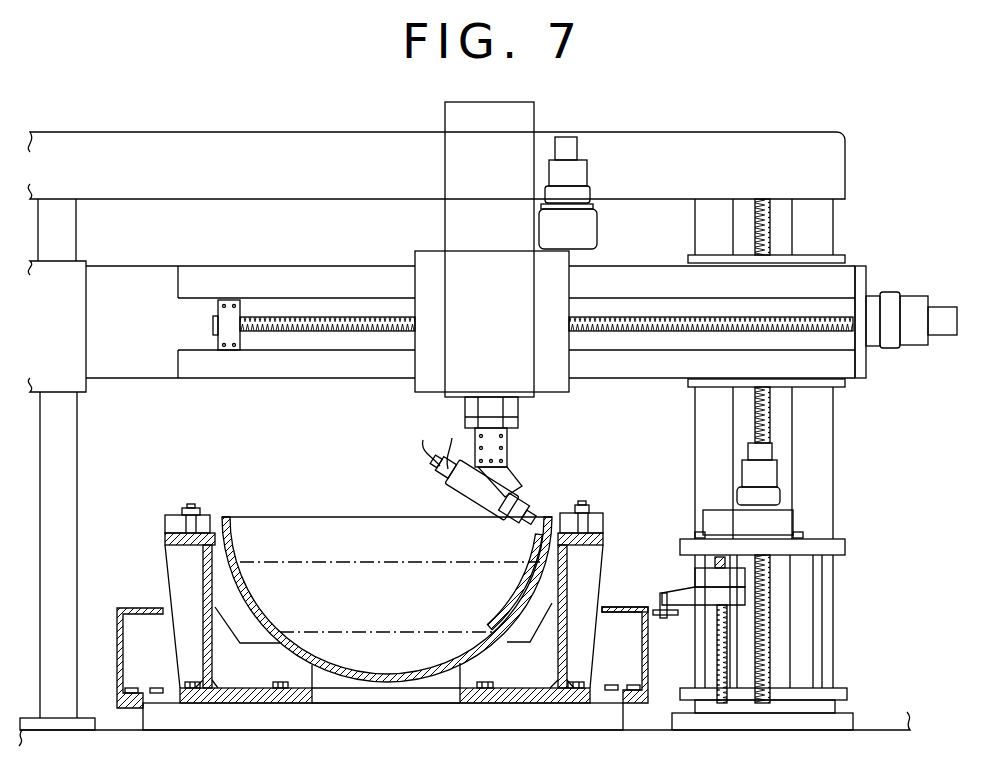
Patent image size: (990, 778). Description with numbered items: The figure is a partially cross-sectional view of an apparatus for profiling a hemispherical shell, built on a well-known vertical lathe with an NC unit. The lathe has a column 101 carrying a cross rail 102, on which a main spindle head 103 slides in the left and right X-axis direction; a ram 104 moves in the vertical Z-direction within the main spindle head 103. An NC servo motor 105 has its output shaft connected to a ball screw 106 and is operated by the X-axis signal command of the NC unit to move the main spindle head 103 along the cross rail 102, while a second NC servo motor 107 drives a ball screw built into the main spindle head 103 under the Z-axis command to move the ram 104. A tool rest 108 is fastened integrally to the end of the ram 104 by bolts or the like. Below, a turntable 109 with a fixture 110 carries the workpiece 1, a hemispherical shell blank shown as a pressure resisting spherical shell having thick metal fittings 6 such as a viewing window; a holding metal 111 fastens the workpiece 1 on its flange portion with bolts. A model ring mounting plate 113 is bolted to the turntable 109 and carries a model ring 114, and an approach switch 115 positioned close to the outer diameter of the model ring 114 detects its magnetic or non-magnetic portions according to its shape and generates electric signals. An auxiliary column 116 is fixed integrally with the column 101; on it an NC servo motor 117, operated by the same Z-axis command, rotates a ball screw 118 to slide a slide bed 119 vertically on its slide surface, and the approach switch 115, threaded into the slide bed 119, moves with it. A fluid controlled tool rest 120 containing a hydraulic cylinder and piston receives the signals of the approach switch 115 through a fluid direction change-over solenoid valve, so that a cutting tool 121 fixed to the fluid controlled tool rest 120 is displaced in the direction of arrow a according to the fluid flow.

The workpiece 1 is at (238, 540).
The thick metal fittings 6 is at (500, 622).
The arrow a is at (515, 500).
The column 101 is at (823, 425).
The cross rail 102 is at (833, 280).
The main spindle head 103 is at (523, 122).
The ram 104 is at (518, 407).
The NC servo motor 105 is at (920, 300).
The ball screw 106 is at (823, 316).
The NC servo motor 107 is at (578, 170).
The tool rest 108 is at (511, 420).
The turntable 109 is at (595, 715).
The fixture 110 is at (607, 535).
The holding metal 111 is at (600, 515).
The model ring mounting plate 113 is at (637, 707).
The model ring 114 is at (633, 605).
The approach switch 115 is at (656, 605).
The auxiliary column 116 is at (840, 548).
The NC servo motor 117 is at (770, 497).
The ball screw 118 is at (733, 642).
The slide bed 119 is at (732, 596).
The fluid controlled tool rest 120 is at (463, 500).
The cutting tool 121 is at (528, 512).